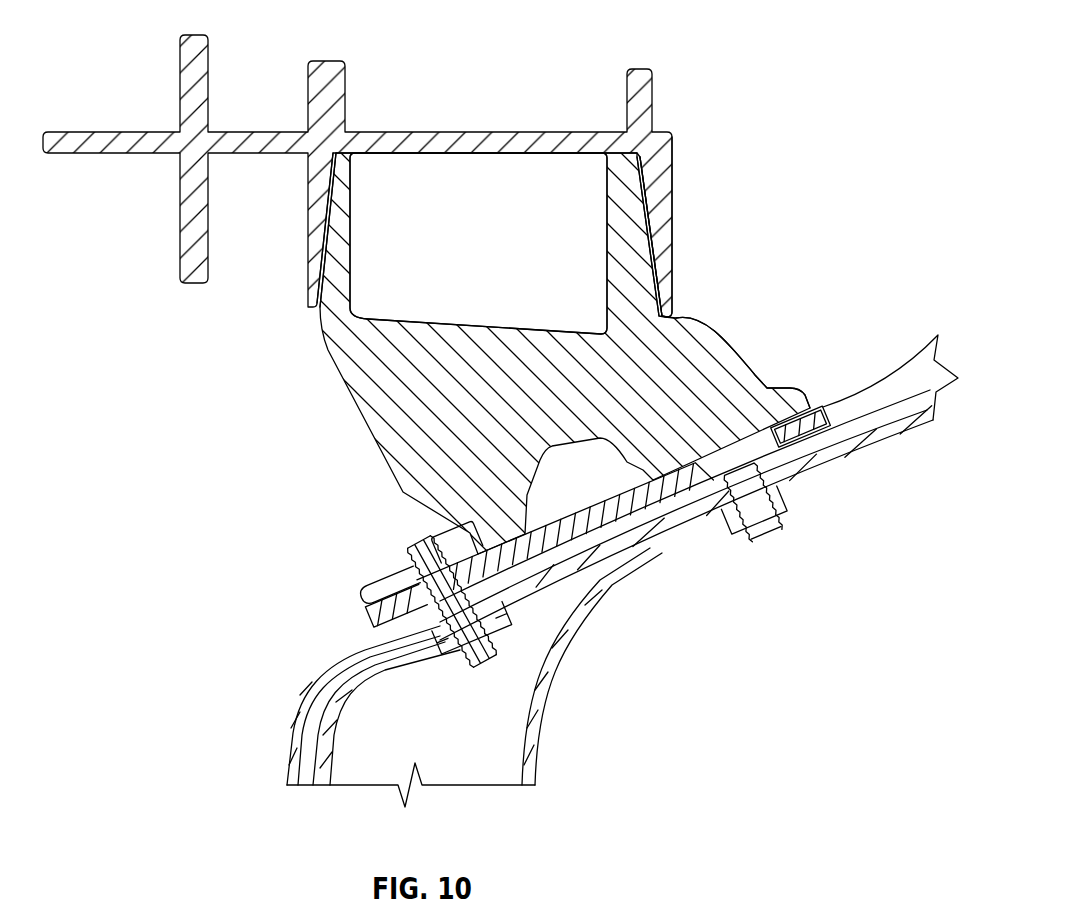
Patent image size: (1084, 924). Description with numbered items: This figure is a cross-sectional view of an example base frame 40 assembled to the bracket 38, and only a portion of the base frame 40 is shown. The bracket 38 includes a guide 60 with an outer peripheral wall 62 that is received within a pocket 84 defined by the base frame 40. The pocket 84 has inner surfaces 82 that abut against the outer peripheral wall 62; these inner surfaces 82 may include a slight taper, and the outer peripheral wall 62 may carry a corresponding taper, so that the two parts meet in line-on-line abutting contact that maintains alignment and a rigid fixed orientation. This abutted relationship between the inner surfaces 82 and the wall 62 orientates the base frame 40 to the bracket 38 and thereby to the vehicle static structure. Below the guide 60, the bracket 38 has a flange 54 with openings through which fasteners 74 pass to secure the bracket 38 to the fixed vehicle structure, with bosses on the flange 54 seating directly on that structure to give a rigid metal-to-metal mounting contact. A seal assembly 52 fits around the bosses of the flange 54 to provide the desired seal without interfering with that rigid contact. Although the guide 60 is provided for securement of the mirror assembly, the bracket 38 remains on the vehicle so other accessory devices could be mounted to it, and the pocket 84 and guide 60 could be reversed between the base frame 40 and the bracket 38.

The bracket 38 is at (720, 387).
The base frame 40 is at (330, 100).
The seal assembly 52 is at (828, 396).
The flange 54 is at (375, 578).
The guide 60 is at (625, 290).
The outer peripheral wall 62 is at (656, 203).
The fasteners 74 is at (412, 534).
The inner surfaces 82 is at (334, 211).
The pocket 84 is at (493, 160).